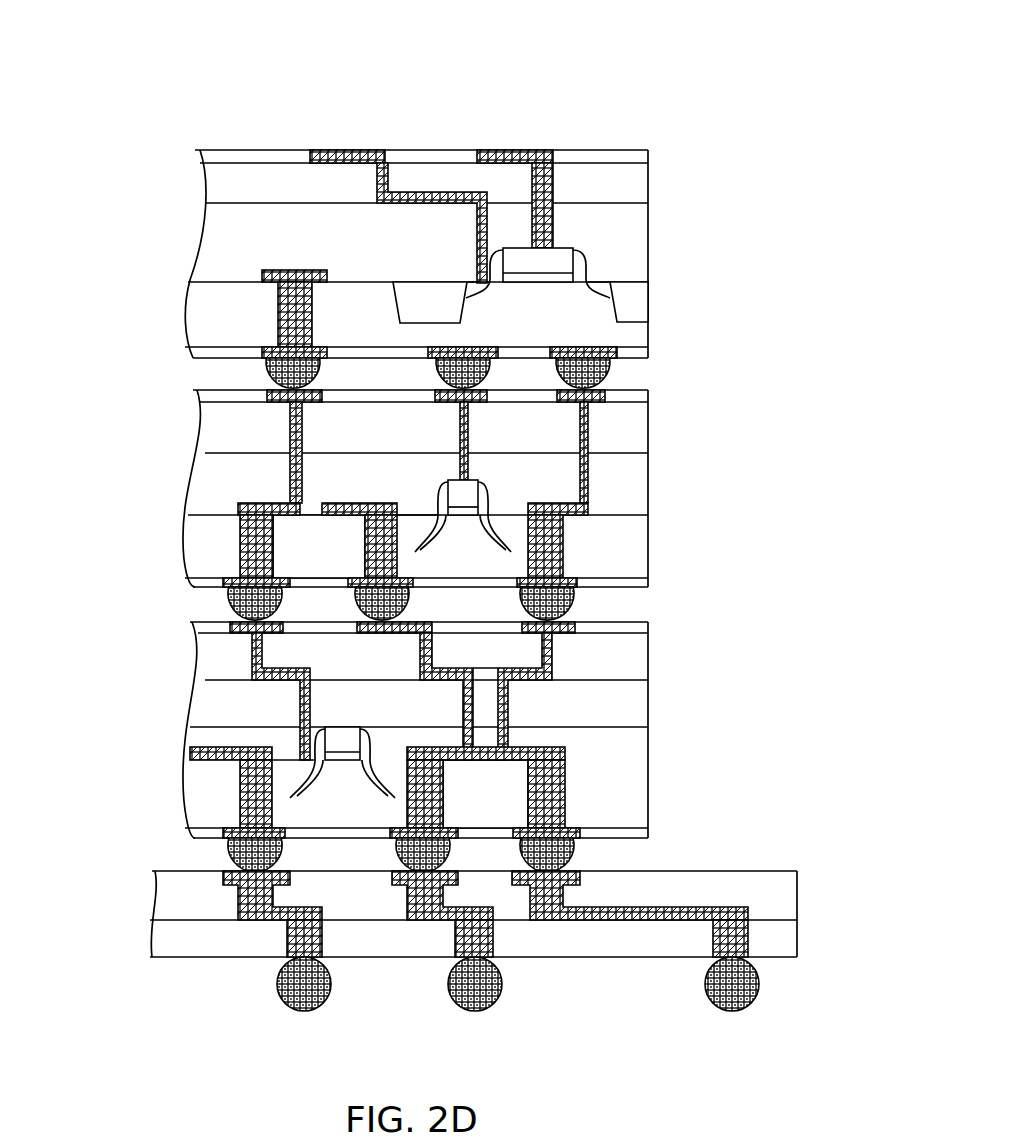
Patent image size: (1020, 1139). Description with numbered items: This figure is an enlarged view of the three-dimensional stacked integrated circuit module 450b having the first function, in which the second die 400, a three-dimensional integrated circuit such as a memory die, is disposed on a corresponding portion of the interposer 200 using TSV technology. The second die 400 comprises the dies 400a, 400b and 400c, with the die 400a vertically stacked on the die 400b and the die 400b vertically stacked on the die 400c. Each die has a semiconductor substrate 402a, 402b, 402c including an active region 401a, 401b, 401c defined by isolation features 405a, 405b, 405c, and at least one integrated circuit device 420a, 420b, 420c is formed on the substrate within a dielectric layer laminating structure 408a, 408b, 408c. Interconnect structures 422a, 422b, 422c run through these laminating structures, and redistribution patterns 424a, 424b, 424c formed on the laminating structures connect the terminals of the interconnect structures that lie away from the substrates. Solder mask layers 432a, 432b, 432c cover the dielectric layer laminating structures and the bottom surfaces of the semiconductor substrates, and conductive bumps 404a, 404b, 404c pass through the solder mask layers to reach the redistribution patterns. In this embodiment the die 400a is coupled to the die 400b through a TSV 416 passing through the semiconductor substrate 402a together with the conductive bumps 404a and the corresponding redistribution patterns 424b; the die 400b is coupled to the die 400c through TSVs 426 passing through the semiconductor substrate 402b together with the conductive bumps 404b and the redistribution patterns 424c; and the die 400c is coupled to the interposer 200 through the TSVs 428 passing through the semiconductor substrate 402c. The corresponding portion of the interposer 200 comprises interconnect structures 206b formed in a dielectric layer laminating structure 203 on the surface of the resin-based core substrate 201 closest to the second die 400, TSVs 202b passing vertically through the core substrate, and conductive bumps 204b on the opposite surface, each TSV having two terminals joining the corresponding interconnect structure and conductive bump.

The 3D stacked integrated circuit module 450b is at (88, 58).
The second die 400 is at (703, 35).
The die 400a is at (125, 218).
The die 400b is at (125, 515).
The die 400c is at (125, 752).
The dielectric layer laminating structure 408a is at (710, 216).
The dielectric layer laminating structure 408b is at (710, 512).
The dielectric layer laminating structure 408c is at (710, 749).
The solder mask layer 432a is at (210, 155).
The solder mask layer 432b is at (210, 396).
The solder mask layer 432c is at (210, 621).
The redistribution pattern 424a is at (340, 148).
The redistribution pattern 424b is at (290, 422).
The redistribution pattern 424c is at (252, 643).
The interconnect structure 422a is at (475, 240).
The interconnect structure 422b is at (302, 430).
The interconnect structure 422c is at (298, 703).
The integrated circuit device 420a is at (585, 252).
The integrated circuit device 420b is at (492, 485).
The integrated circuit device 420c is at (390, 707).
The active region 401a is at (600, 278).
The active region 401b is at (413, 510).
The active region 401c is at (290, 755).
The semiconductor substrate 402a is at (563, 326).
The semiconductor substrate 402b is at (343, 558).
The semiconductor substrate 402c is at (512, 806).
The isolation feature 405a is at (410, 301).
The isolation feature 405b is at (513, 552).
The isolation feature 405c is at (393, 800).
The conductive bump 404a is at (293, 376).
The conductive bump 404b is at (255, 603).
The conductive bump 404c is at (583, 375).
The TSV 416 is at (293, 315).
The TSV 426 is at (257, 547).
The TSV 428 is at (255, 795).
The interposer 200 is at (120, 970).
The resin-based core substrate 201 is at (163, 941).
The dielectric layer laminating structure 203 is at (163, 896).
The interconnect structure 206b is at (262, 898).
The TSV 202b is at (310, 940).
The conductive bump 204b is at (305, 988).